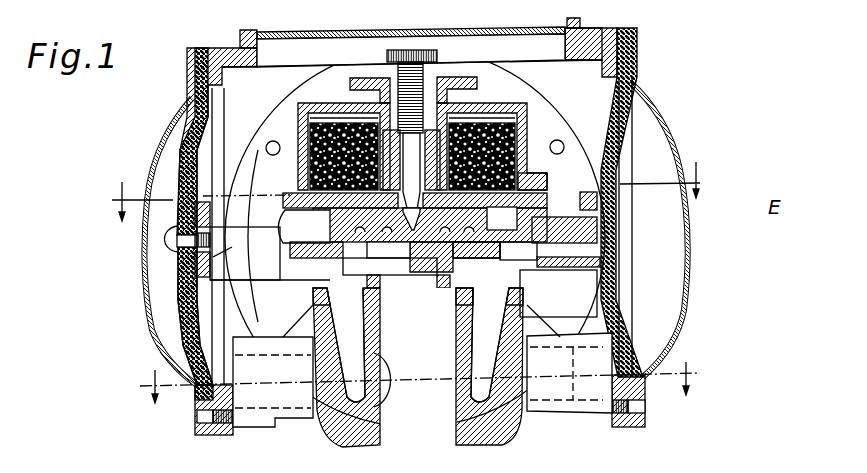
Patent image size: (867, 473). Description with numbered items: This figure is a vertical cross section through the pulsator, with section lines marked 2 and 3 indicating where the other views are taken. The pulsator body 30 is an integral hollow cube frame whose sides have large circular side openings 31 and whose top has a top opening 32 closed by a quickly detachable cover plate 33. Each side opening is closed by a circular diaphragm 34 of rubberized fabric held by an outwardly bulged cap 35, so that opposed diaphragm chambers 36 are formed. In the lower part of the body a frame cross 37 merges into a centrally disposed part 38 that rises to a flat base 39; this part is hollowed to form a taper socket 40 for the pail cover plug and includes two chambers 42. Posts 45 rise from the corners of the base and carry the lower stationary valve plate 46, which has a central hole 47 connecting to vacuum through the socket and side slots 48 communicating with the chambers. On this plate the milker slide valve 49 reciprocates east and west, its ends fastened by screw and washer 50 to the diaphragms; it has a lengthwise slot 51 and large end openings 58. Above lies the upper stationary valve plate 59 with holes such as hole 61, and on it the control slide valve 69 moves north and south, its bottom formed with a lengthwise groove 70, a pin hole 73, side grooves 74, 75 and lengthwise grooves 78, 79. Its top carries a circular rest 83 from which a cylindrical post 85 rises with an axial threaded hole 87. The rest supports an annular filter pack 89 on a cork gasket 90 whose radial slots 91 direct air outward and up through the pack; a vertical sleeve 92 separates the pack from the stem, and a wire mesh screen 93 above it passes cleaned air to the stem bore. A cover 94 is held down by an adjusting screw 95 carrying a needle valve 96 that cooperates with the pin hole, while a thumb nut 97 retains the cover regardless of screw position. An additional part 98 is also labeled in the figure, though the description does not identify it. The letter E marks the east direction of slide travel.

The section line 2- 2 is at (406, 182).
The section line 3- 3 is at (420, 372).
The pulsator body 30 is at (603, 42).
The side openings 31 is at (200, 78).
The top opening 32 is at (315, 54).
The cover plate 33 is at (359, 35).
The circular diaphragm 34 is at (185, 332).
The outwardly bulged caps 35 is at (148, 296).
The diaphragm chambers 36 is at (160, 261).
The frame cross 37 is at (258, 430).
The centrally disposed part 38 is at (313, 340).
The base 39 is at (382, 300).
The taper socket 40 is at (418, 367).
The chambers 42 is at (493, 332).
The posts 45 is at (373, 253).
The lower stationary valve plate 46 is at (558, 293).
The central hole 47 is at (450, 300).
The side slots 48 is at (418, 299).
The milker slide valve 49 is at (618, 217).
The screw and washer 50 is at (168, 242).
The lengthwise slot 51 is at (313, 283).
The openings 58 is at (173, 313).
The upper stationary valve plate 59 is at (617, 265).
The hole 61 is at (407, 276).
The control slide valve 69 is at (287, 177).
The lengthwise groove 70 is at (483, 230).
The pin hole 73 is at (566, 130).
The side groove 74 is at (310, 260).
The side groove 75 is at (530, 308).
The lengthwise groove 78 is at (388, 250).
The lengthwise groove 79 is at (490, 345).
The circular rest 83 is at (618, 175).
The cylindrical post 85 is at (380, 110).
The threaded hole 87 is at (433, 157).
The annular filter pack 89 is at (500, 147).
The cork gasket 90 is at (543, 168).
The radial slots 91 is at (290, 175).
The vertical sleeve 92 is at (457, 108).
The wire mesh screen 93 is at (525, 100).
The cover 94 is at (300, 93).
The adjusting screw 95 is at (437, 55).
The needle valve 96 is at (340, 214).
The thumb nut 97 is at (455, 50).
The coil base 98 is at (285, 192).